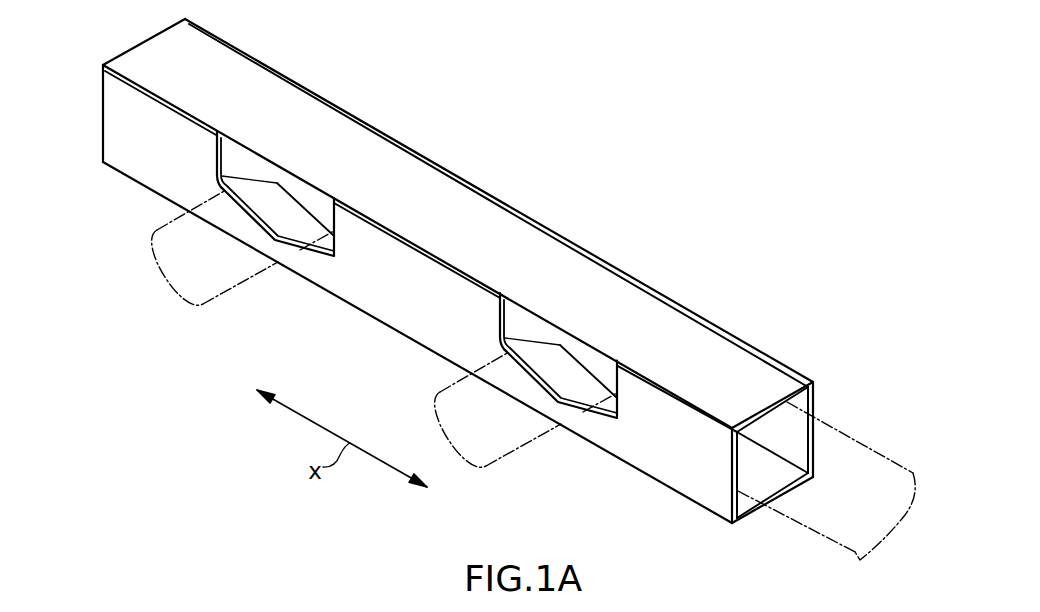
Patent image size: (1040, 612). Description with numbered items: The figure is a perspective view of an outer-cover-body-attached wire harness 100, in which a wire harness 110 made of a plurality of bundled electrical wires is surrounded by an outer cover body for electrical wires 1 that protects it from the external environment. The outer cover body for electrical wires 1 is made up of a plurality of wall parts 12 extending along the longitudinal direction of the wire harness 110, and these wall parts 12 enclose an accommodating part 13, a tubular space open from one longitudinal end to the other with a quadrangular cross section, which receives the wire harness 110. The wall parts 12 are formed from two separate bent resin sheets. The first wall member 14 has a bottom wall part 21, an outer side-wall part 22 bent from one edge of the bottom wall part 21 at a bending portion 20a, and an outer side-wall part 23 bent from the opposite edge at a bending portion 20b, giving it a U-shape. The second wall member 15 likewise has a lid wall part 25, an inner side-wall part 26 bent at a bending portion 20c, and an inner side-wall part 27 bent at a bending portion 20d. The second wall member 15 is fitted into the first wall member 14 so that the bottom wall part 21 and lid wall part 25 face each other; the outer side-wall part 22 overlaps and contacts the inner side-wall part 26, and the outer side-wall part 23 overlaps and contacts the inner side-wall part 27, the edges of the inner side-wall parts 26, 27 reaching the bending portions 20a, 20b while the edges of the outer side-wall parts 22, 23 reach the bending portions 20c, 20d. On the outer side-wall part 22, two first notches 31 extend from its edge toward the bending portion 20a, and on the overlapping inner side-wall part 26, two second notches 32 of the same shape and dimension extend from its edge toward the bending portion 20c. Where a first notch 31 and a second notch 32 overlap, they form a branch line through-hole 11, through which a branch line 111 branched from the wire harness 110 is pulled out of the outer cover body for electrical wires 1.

The outer cover body for electrical wires 1 is at (712, 255).
The branch line through-hole 11 is at (276, 212).
The branch line 111 is at (218, 297).
The wall part 12 is at (560, 234).
The accommodating part 13 is at (773, 448).
The first wall member 14 is at (758, 508).
The second wall member 15 is at (767, 383).
The bending portion 20a is at (732, 523).
The bending portion 20b is at (815, 478).
The bending portion 20c is at (578, 340).
The bending portion 20d is at (657, 291).
The bottom wall part 21 is at (767, 483).
The outer side-wall part 22 is at (685, 458).
The outer side-wall part 23 is at (817, 407).
The lid wall part 25 is at (720, 367).
The inner side-wall part 26 is at (233, 155).
The inner side-wall part 27 is at (795, 432).
The first notch 31 is at (276, 243).
The second notch 32 is at (264, 182).
The outer-cover-body-attached wire harness 100 is at (907, 397).
The wire harness 110 is at (880, 447).